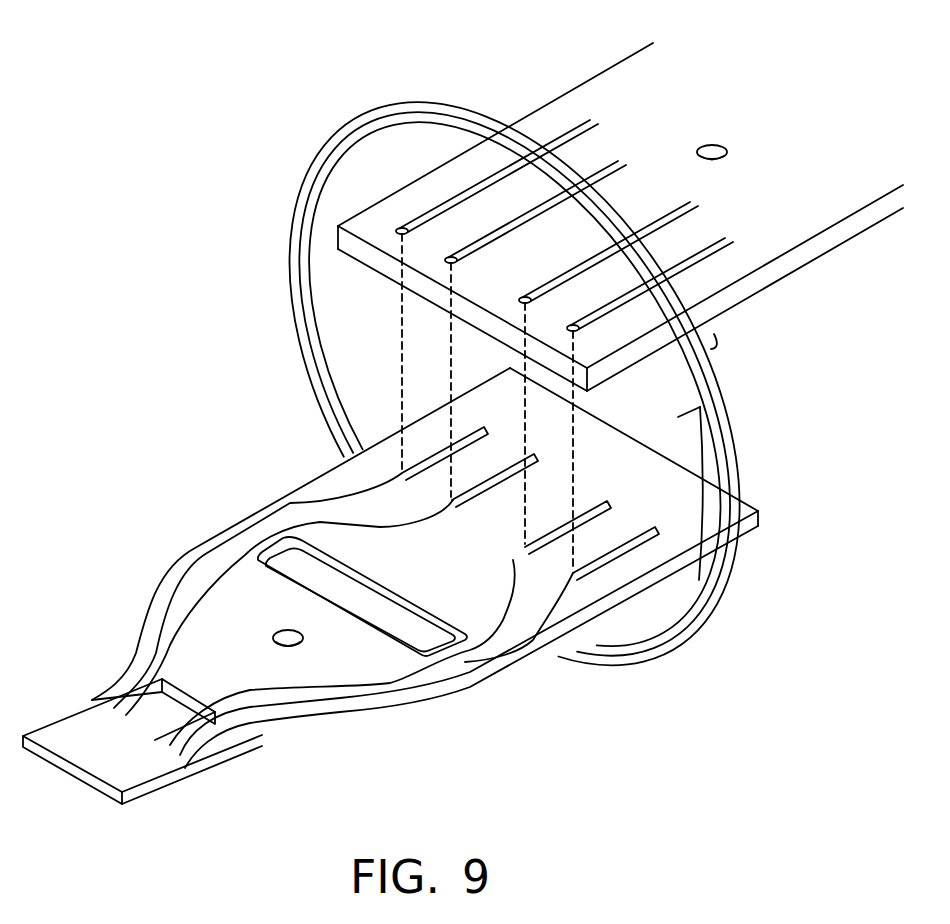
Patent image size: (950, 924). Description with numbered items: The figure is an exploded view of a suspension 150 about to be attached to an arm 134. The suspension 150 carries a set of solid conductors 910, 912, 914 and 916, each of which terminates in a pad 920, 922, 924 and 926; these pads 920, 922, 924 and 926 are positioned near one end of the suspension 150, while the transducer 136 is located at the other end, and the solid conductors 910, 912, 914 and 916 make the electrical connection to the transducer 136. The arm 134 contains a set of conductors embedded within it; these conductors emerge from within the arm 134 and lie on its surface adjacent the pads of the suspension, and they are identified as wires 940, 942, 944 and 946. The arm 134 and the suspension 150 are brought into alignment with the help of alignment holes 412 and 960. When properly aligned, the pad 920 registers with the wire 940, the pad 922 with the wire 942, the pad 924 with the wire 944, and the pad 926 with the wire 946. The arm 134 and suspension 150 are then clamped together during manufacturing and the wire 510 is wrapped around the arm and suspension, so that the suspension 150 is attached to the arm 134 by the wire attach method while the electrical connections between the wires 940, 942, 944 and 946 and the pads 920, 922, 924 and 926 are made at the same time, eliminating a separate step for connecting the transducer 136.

The arm 134 is at (585, 102).
The alignment hole 412 is at (707, 150).
The wire 510 is at (735, 570).
The solid conductor 910 is at (330, 473).
The solid conductor 912 is at (302, 520).
The solid conductor 914 is at (510, 617).
The solid conductor 916 is at (553, 612).
The pad 920 is at (435, 450).
The pad 922 is at (482, 476).
The pad 924 is at (605, 495).
The pad 926 is at (622, 533).
The wire 940 is at (400, 228).
The wire 942 is at (451, 258).
The wire 944 is at (525, 300).
The wire 946 is at (573, 330).
The alignment hole 960 is at (275, 632).
The suspension 150 is at (257, 688).
The transducer 136 is at (110, 793).